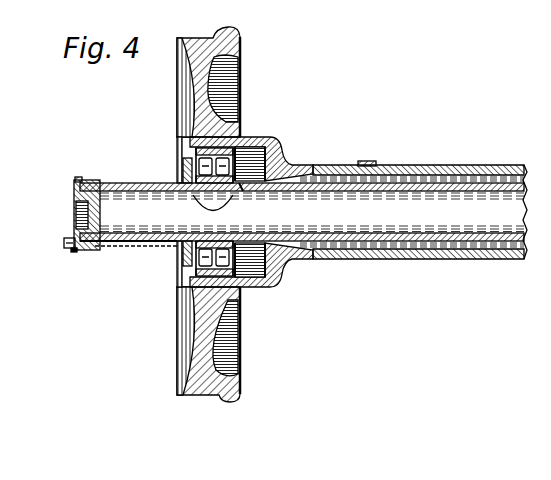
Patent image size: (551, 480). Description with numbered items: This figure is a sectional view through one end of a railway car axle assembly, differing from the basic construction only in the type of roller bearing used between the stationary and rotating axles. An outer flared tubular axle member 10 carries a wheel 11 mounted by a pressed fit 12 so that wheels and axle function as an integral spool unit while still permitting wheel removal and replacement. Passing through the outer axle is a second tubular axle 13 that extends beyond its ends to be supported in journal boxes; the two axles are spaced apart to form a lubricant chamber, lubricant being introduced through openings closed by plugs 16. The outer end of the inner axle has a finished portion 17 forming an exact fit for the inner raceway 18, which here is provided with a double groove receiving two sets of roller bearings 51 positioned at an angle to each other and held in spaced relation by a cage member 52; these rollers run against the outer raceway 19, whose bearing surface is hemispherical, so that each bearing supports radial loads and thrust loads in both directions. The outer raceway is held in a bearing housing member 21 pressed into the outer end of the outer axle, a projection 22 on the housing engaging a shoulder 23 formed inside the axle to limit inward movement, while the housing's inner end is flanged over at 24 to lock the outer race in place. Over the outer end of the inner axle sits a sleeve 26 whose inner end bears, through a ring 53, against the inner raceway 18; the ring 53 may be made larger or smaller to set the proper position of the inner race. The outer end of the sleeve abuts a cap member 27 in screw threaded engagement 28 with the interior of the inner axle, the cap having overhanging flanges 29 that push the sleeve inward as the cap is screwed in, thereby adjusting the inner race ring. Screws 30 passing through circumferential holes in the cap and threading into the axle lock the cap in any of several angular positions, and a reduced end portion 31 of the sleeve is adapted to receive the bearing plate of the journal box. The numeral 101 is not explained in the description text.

The outer flared tubular axle member 10 is at (388, 169).
The wheel 11 is at (241, 48).
The pressed fit 12 is at (240, 100).
The second tubular axle 13 is at (416, 191).
The plug 16 is at (368, 160).
The finished portion 17 is at (213, 206).
The inner raceway 18 is at (241, 194).
The outer raceway 19 is at (240, 150).
The bearing housing member 21 is at (187, 267).
The projection 22 is at (188, 282).
The shoulder 23 is at (227, 318).
The flanged inner end 24 is at (245, 289).
The sleeve 26 is at (150, 250).
The cap member 27 is at (83, 222).
The screw threaded engagement 28 is at (72, 198).
The overhanging flange 29 is at (70, 252).
The screw 30 is at (65, 241).
The reduced end portion 31 is at (91, 181).
The roller bearings 51 is at (291, 148).
The cage member 52 is at (190, 159).
The ring 53 is at (182, 172).
The bearing cup 101 is at (192, 144).